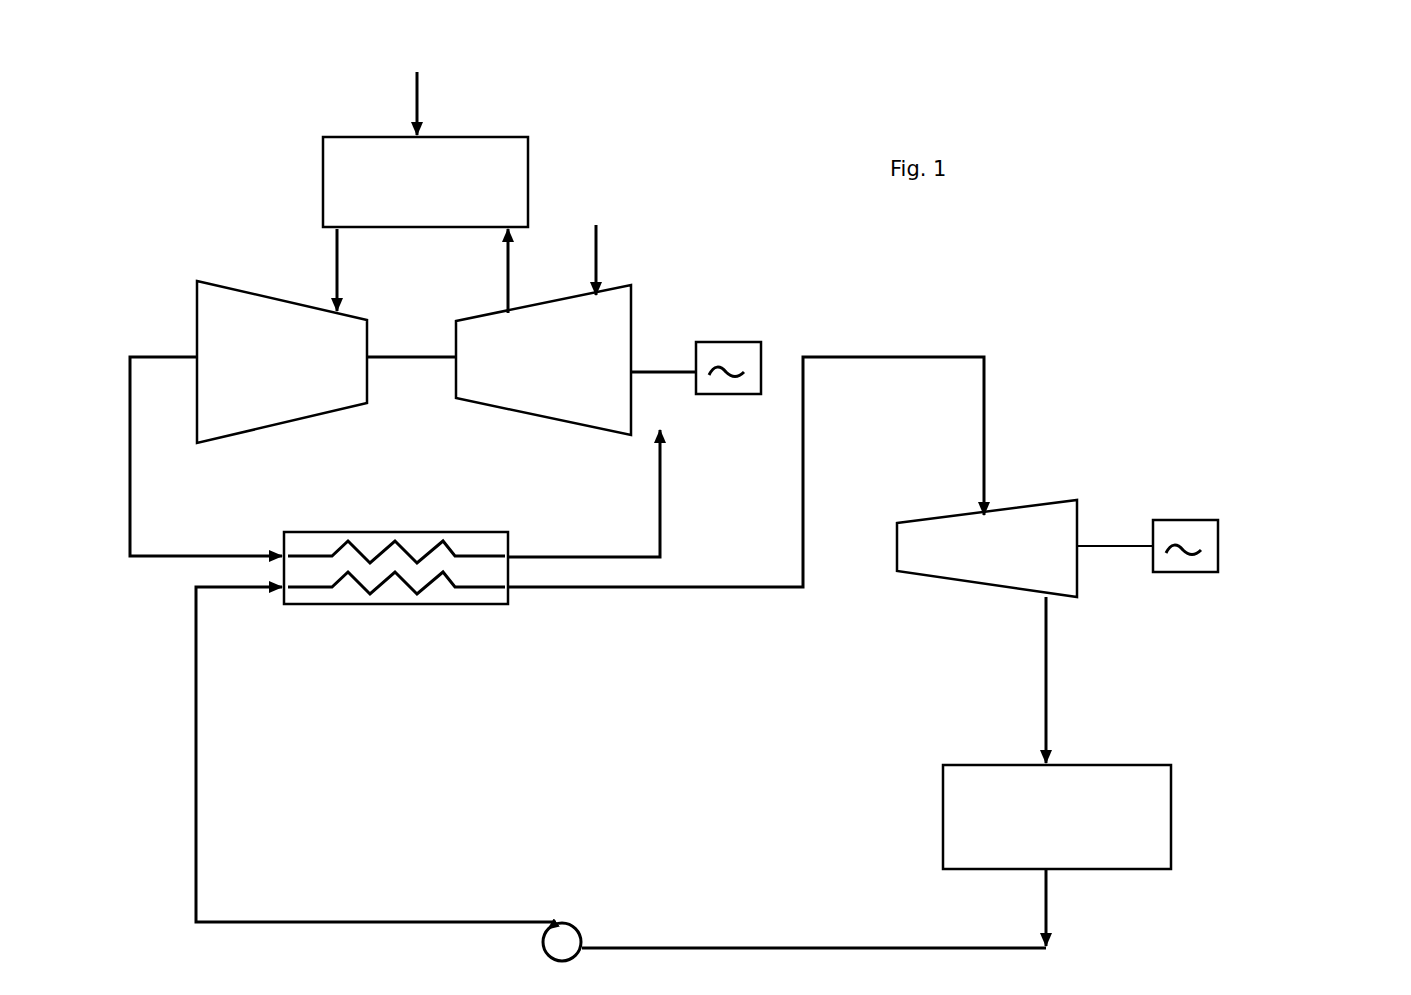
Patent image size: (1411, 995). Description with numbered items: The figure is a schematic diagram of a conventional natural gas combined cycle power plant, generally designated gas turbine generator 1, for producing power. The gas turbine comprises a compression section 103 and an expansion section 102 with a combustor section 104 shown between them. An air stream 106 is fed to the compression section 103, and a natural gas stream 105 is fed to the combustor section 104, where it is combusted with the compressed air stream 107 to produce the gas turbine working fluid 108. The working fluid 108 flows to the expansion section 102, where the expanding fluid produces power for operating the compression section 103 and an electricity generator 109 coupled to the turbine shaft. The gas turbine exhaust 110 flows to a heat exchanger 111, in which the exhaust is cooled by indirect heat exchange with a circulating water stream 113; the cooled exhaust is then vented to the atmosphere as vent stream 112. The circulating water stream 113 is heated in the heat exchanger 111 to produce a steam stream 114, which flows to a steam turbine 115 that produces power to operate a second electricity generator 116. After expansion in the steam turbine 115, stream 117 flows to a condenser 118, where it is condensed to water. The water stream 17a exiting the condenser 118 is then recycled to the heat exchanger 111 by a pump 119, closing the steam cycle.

The gas turbine generator 1 is at (617, 162).
The expansion section 102 is at (284, 425).
The compression section 103 is at (508, 428).
The combustor section 104 is at (318, 181).
The natural gas stream 105 is at (453, 116).
The air stream 106 is at (616, 227).
The compressed air stream 107 is at (483, 276).
The gas turbine working fluid 108 is at (315, 270).
The electricity generator 109 is at (714, 332).
The gas turbine exhaust 110 is at (164, 517).
The heat exchanger 111 is at (370, 616).
The vent stream 112 is at (669, 538).
The circulating water stream 113 is at (233, 848).
The steam stream 114 is at (905, 337).
The steam turbine 115 is at (1048, 490).
The electricity generator 116 is at (1233, 532).
The expanded steam stream 117 is at (1051, 669).
The condenser 118 is at (1181, 816).
The pump 119 is at (567, 905).
The water stream 17a is at (768, 937).